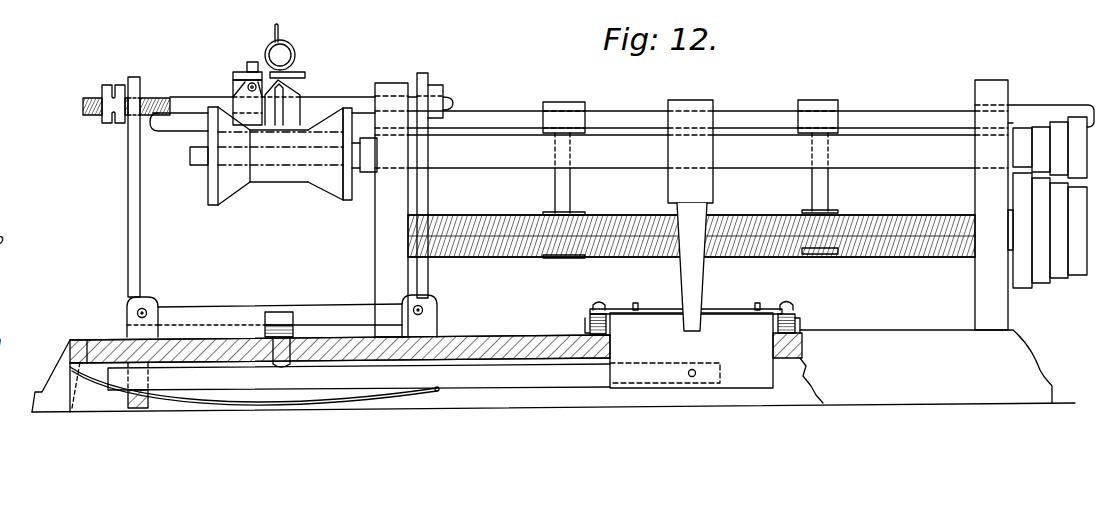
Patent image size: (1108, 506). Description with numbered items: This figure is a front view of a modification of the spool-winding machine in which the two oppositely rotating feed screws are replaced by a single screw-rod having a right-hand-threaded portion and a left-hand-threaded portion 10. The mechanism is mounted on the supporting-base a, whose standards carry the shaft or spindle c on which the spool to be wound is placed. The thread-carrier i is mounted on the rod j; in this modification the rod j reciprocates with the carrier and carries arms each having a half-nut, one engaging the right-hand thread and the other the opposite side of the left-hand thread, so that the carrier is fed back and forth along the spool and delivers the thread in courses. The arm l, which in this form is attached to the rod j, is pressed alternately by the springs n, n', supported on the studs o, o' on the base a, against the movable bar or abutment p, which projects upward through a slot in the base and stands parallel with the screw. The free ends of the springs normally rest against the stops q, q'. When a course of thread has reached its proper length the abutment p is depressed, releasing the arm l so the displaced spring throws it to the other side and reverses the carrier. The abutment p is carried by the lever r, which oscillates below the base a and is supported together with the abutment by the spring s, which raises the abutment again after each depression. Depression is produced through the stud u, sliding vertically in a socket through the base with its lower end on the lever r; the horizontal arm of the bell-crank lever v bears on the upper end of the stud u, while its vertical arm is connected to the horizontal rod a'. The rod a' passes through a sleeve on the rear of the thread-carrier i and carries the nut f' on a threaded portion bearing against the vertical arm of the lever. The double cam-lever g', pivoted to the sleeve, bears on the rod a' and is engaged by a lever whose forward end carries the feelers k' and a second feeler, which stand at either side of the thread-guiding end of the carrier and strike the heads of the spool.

The supporting-base a is at (553, 371).
The horizontal rod a' is at (250, 103).
The shaft or spindle c is at (203, 156).
The nut f' is at (111, 95).
The double cam-lever g' is at (607, 159).
The thread-carrier i is at (262, 100).
The rod j is at (500, 113).
The feeler k' is at (296, 74).
The arm l is at (668, 102).
The spring n is at (686, 323).
The spring n' is at (799, 330).
The stud o is at (595, 310).
The stud o' is at (796, 308).
The movable bar or abutment p is at (691, 350).
The stop q is at (638, 297).
The stop q' is at (758, 298).
The lever r is at (242, 366).
The spring s is at (254, 388).
The bolt t' is at (126, 397).
The stud u is at (274, 338).
The bell-crank lever v is at (130, 175).
The left-hand-threaded portion 10 is at (635, 243).